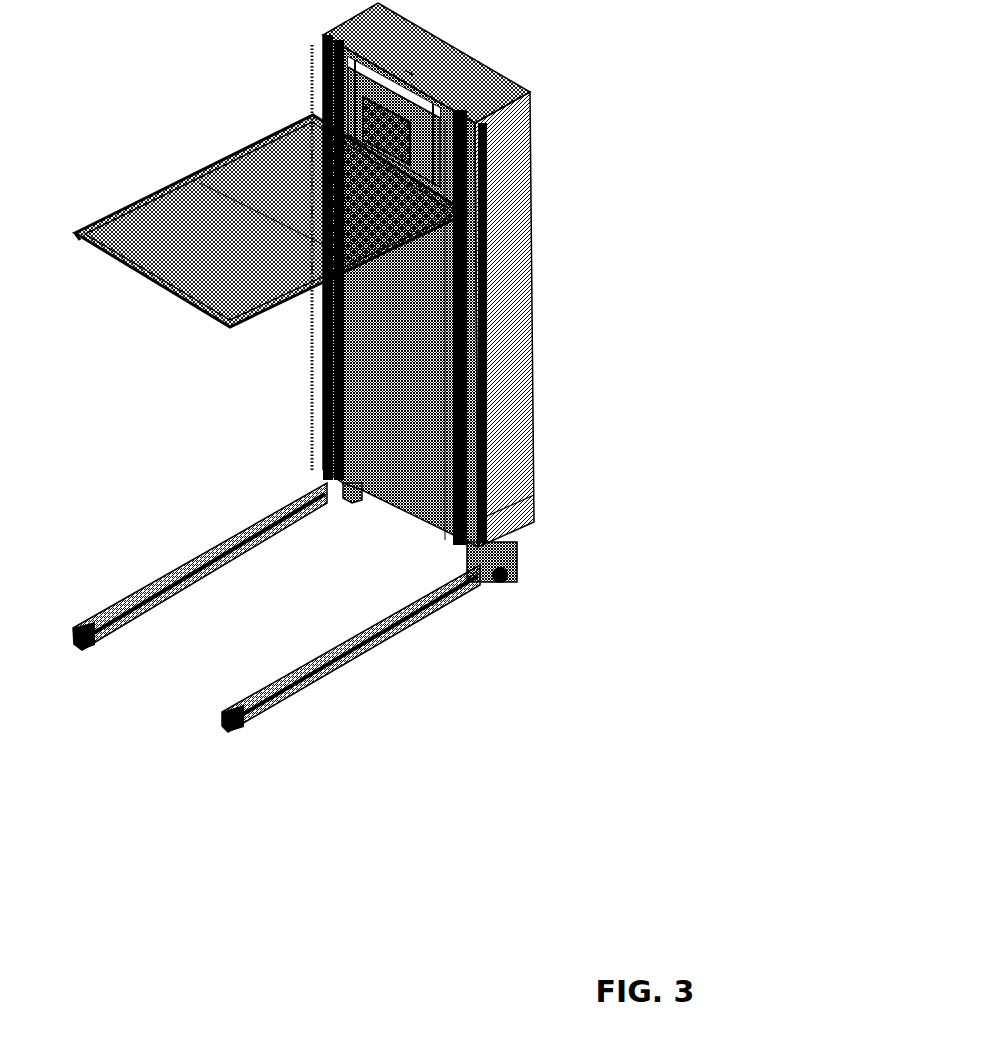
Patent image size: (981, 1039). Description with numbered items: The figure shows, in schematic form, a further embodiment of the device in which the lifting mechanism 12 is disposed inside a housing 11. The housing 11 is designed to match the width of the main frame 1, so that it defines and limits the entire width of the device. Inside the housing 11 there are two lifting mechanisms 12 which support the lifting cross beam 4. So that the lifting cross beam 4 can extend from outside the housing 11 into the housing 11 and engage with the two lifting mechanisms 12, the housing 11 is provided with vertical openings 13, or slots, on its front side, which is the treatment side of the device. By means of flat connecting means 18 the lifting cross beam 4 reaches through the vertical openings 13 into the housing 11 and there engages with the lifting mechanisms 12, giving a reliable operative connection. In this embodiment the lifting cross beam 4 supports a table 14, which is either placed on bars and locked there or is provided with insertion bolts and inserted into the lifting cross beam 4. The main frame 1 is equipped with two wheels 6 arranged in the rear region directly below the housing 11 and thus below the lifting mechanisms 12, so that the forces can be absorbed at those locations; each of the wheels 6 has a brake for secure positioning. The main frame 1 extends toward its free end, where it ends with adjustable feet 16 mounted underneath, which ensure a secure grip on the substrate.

The main frame 1 is at (183, 561).
The lifting cross beam 4 is at (316, 118).
The wheels 6 is at (352, 500).
The housing 11 is at (506, 298).
The lifting mechanism 12 is at (452, 116).
The vertical openings 13 is at (342, 386).
The table 14 is at (223, 255).
The adjustable feet 16 is at (88, 652).
The flat connecting means 18 is at (445, 178).